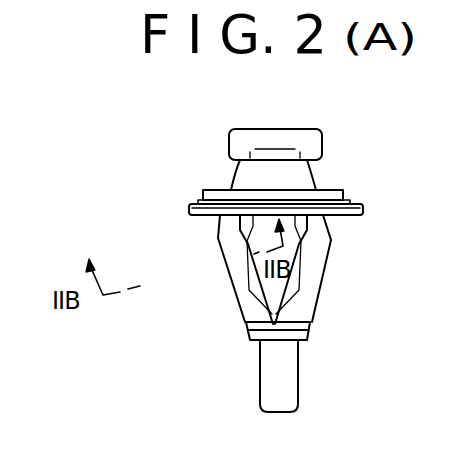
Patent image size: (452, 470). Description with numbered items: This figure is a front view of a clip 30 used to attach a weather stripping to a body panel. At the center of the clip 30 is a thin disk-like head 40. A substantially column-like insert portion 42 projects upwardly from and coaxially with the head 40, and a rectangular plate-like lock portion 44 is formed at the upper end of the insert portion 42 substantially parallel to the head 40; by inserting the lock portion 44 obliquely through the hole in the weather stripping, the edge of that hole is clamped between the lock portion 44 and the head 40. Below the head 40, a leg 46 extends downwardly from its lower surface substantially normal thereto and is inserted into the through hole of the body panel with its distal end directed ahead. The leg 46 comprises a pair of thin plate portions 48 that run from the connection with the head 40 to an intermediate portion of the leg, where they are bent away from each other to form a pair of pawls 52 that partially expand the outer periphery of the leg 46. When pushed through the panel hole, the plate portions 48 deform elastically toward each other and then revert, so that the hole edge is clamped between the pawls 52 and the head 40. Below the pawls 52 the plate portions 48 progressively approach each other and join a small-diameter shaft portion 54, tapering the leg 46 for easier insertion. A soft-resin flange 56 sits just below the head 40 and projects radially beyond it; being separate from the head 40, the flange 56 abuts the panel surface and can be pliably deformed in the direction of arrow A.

The clip 30 is at (314, 116).
The lock portion 44 is at (261, 129).
The insert portion 42 is at (255, 172).
The head 40 is at (316, 190).
The flange 56 is at (351, 203).
The pawls 52 is at (226, 228).
The plate portions 48 is at (238, 279).
The leg 46 is at (347, 309).
The shaft portion 54 is at (268, 378).
The arrow A is at (353, 242).